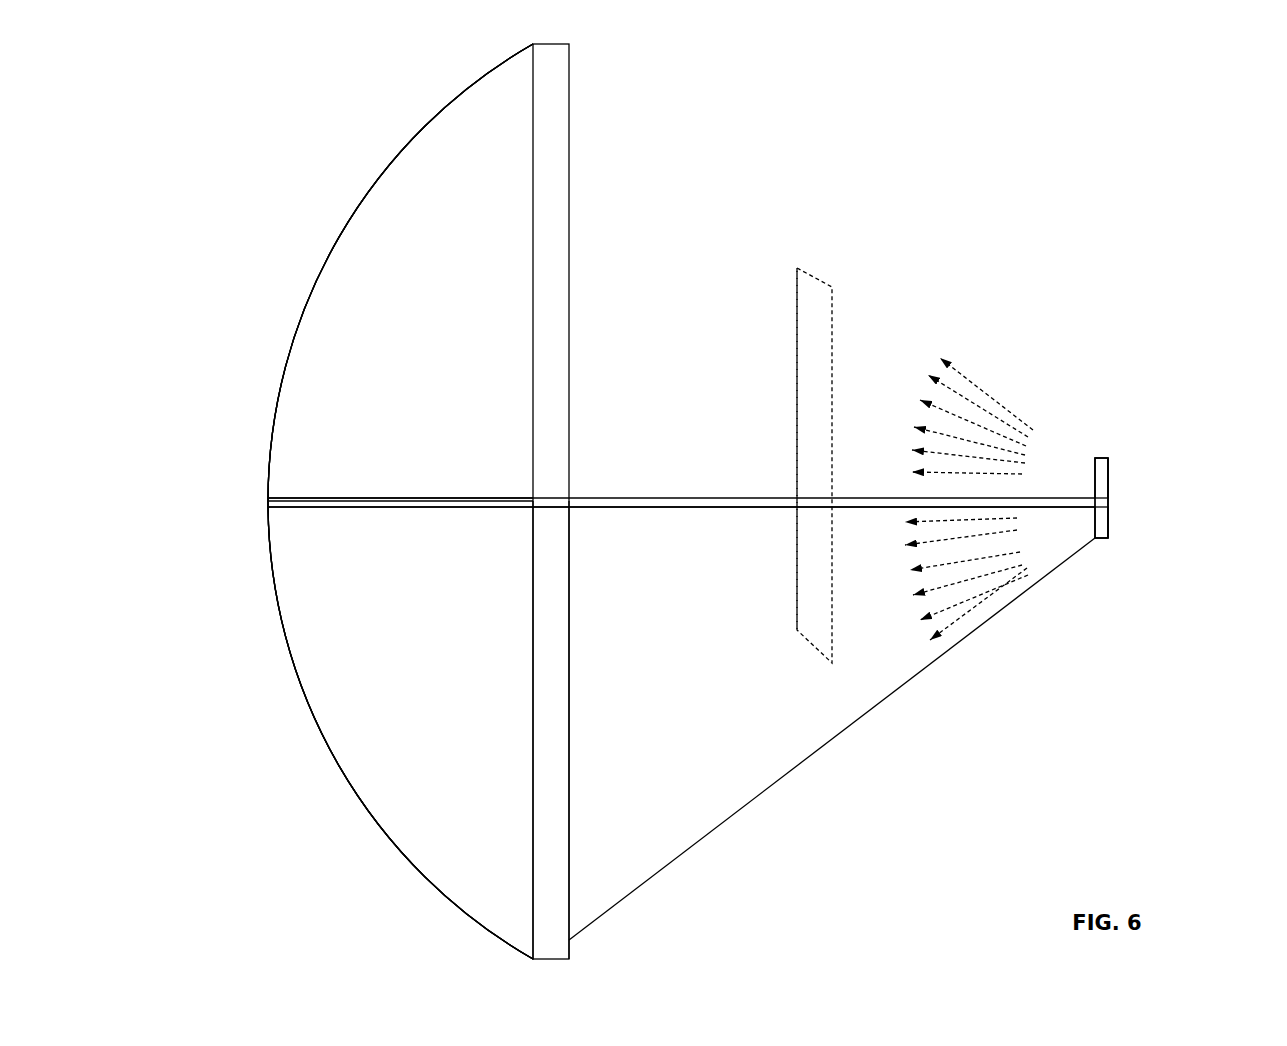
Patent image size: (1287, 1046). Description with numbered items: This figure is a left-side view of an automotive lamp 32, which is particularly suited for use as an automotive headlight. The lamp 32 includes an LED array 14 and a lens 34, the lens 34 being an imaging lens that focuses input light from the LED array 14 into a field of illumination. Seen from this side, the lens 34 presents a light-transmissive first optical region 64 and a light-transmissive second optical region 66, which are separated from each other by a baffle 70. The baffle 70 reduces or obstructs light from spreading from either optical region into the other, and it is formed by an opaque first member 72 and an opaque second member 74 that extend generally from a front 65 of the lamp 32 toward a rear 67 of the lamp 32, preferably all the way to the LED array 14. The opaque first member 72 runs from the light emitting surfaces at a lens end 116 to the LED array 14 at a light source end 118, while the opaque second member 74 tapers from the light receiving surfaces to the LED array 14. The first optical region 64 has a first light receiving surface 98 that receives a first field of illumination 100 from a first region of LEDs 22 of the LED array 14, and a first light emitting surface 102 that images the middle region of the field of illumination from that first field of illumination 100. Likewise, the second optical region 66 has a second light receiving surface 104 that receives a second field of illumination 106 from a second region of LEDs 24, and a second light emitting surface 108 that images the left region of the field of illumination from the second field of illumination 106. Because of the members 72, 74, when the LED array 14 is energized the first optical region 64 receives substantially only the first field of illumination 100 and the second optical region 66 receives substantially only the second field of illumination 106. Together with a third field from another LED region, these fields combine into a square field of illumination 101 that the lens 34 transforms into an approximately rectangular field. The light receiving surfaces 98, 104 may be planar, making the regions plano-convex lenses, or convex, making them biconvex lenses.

The automotive lamp 32 is at (161, 104).
The front 65 is at (164, 401).
The first light emitting surface 102 is at (305, 309).
The second light emitting surface 108 is at (316, 722).
The light-transmissive first optical region 64 is at (448, 347).
The light-transmissive second optical region 66 is at (448, 695).
The first light receiving surface 98 is at (569, 300).
The second light receiving surface 104 is at (569, 700).
The baffle 70 is at (691, 453).
The opaque first member 72 is at (745, 508).
The lens end 116 is at (268, 498).
The opaque second member 74 is at (849, 725).
The lens 34 is at (800, 237).
The square field of illumination 101 is at (797, 271).
The first field of illumination 100 is at (983, 422).
The second field of illumination 106 is at (973, 582).
The LED array 14 is at (1108, 462).
The first region of LEDs 22 is at (1091, 470).
The second region of LEDs 24 is at (1088, 522).
The rear 67 is at (1148, 339).
The light source end 118 is at (1101, 505).